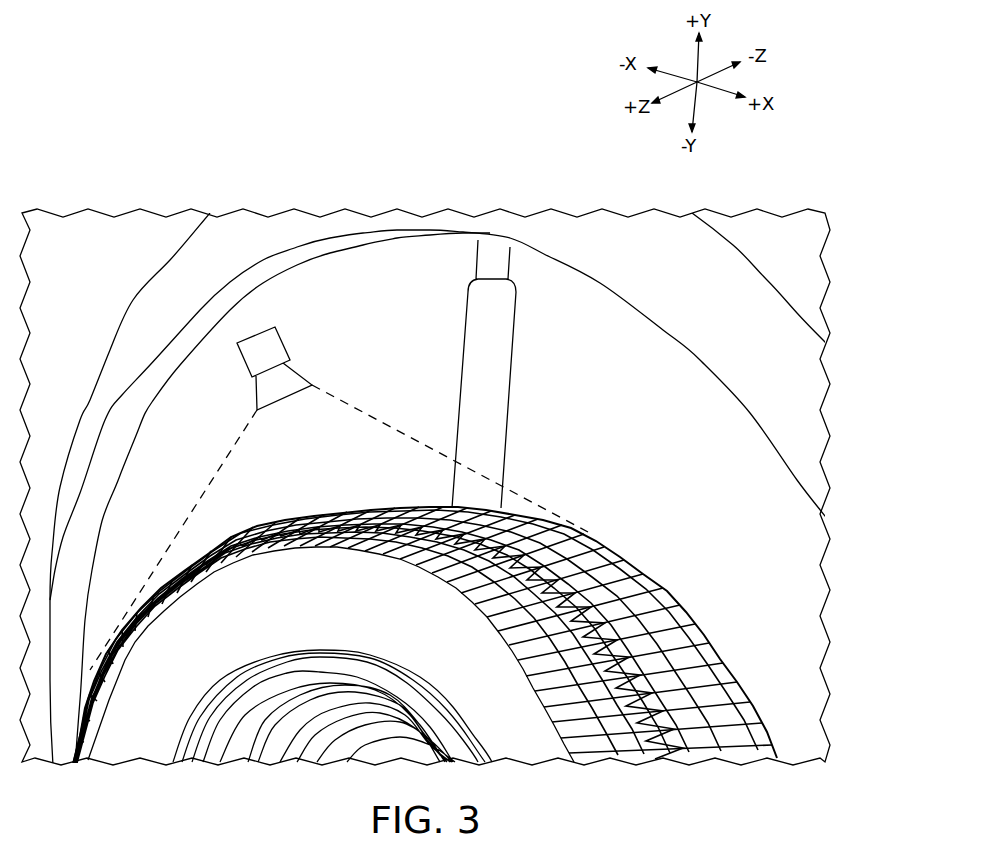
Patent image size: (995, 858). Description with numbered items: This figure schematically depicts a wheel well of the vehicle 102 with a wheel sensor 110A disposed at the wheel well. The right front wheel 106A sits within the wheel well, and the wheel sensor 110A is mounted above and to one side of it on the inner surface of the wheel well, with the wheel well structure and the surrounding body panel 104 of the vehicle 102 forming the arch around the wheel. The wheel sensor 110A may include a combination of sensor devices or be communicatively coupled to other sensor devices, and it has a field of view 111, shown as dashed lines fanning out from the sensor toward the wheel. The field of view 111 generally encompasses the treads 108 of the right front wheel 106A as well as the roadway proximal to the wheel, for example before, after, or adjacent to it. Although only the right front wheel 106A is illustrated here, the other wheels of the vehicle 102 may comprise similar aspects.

The vehicle 102 is at (93, 228).
The wheel well / fender 104 is at (795, 604).
The right front wheel 106A is at (530, 735).
The treads 108 is at (523, 622).
The wheel sensor 110A is at (296, 348).
The field of view 111 is at (343, 433).